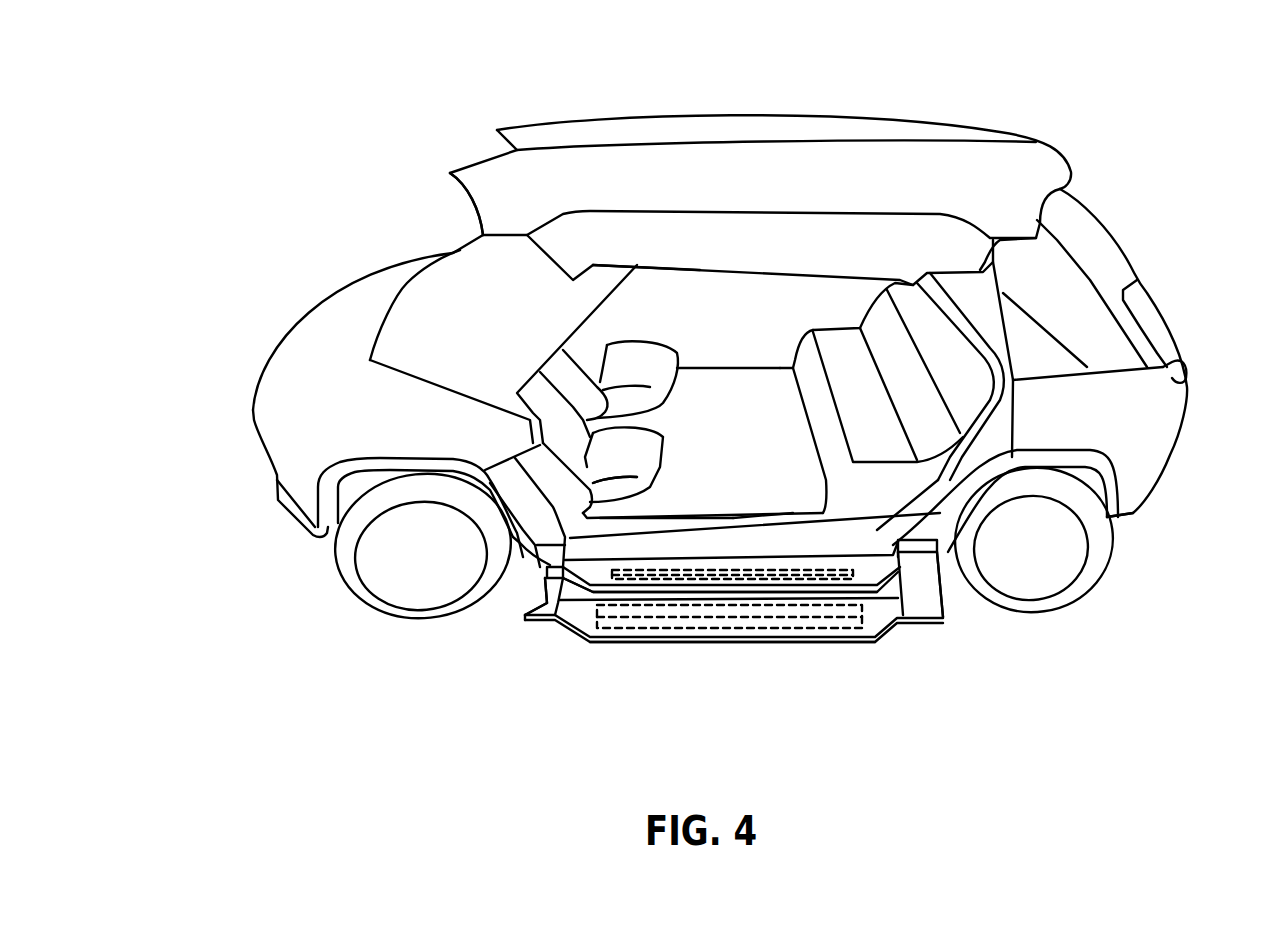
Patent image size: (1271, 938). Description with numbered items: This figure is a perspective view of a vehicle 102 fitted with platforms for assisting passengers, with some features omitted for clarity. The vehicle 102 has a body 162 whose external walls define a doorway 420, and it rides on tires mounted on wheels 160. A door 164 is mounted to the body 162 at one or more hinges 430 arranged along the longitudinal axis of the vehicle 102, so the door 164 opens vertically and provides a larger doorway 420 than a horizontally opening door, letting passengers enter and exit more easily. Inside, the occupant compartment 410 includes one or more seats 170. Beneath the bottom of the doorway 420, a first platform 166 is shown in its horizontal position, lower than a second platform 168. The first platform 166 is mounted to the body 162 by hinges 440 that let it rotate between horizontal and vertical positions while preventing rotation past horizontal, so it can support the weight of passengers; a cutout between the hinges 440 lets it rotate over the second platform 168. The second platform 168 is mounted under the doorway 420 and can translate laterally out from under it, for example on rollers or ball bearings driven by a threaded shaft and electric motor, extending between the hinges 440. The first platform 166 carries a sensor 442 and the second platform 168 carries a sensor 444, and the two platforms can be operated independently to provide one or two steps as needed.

The vehicle 102 is at (1137, 82).
The door 164 is at (483, 217).
The hinges 430 is at (623, 253).
The body 162 is at (1137, 430).
The wheels 160 is at (353, 563).
The seats 170 is at (603, 488).
The hinges 440 is at (553, 582).
The second platform 168 is at (607, 582).
The first platform 166 is at (658, 638).
The sensor 444 is at (682, 576).
The sensor 442 is at (633, 618).
The doorway 420 is at (775, 493).
The occupant compartment 410 is at (781, 516).